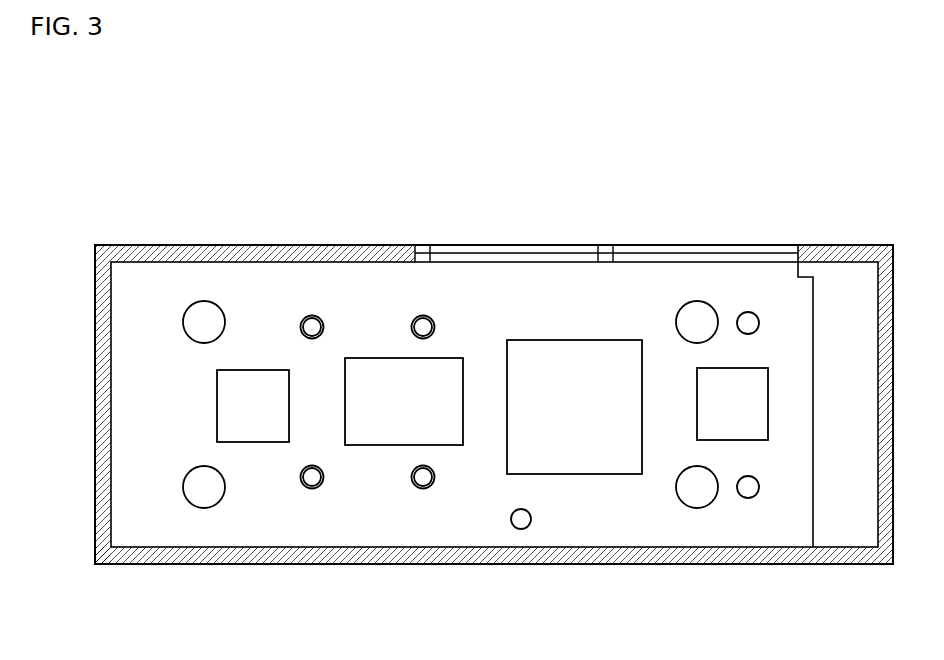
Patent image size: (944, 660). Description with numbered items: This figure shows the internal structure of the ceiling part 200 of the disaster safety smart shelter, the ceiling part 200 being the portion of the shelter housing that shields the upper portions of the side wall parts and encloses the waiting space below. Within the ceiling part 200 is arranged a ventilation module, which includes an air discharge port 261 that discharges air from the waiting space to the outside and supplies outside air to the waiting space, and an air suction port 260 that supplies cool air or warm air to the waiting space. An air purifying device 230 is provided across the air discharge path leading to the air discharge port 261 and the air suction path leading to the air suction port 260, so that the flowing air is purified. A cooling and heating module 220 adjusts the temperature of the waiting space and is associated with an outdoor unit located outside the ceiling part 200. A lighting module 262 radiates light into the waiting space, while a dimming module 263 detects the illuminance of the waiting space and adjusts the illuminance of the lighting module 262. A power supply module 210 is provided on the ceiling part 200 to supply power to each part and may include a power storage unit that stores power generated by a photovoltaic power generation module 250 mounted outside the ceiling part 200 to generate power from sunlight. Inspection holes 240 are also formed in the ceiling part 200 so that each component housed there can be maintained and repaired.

The ceiling part 200 is at (180, 230).
The power supply module 210 is at (841, 293).
The cooling and heating module 220 is at (583, 474).
The air purifying device 230 is at (382, 445).
The inspection holes 240 is at (262, 442).
The photovoltaic power generation module 250 is at (768, 425).
The air suction port 260 is at (689, 489).
The air discharge port 261 is at (201, 334).
The lighting module 262 is at (750, 322).
The dimming module 263 is at (512, 523).